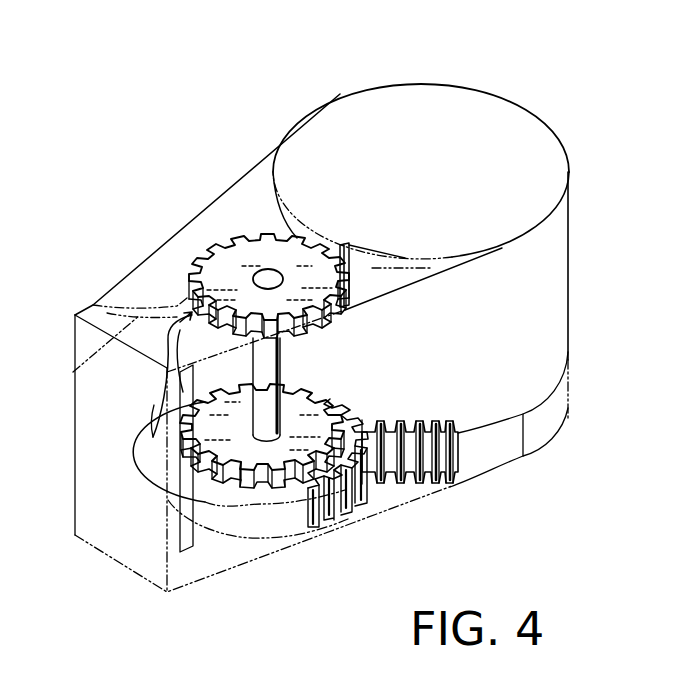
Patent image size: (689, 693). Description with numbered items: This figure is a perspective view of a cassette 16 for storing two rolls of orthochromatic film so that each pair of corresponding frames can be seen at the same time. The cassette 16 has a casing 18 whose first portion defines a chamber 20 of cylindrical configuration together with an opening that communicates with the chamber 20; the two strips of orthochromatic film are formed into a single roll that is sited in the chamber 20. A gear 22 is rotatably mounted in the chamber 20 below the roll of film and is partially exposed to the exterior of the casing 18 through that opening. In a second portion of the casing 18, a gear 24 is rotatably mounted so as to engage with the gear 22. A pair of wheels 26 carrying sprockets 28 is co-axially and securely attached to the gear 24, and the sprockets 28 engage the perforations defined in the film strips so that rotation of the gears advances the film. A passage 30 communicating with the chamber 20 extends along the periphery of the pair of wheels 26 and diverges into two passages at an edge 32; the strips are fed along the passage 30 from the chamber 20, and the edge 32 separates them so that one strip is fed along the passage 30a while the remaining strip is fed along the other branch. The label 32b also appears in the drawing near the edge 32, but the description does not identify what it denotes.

The cassette 16 is at (331, 89).
The casing 18 is at (224, 183).
The chamber 20 is at (500, 172).
The gear 22 is at (465, 465).
The gear 24 is at (293, 513).
The pair of wheels 26 is at (228, 268).
The sprockets 28 is at (190, 288).
The passage 30 is at (349, 243).
The passage 30a is at (106, 352).
The edge 32 is at (187, 318).
The spring lower end 32b is at (153, 437).